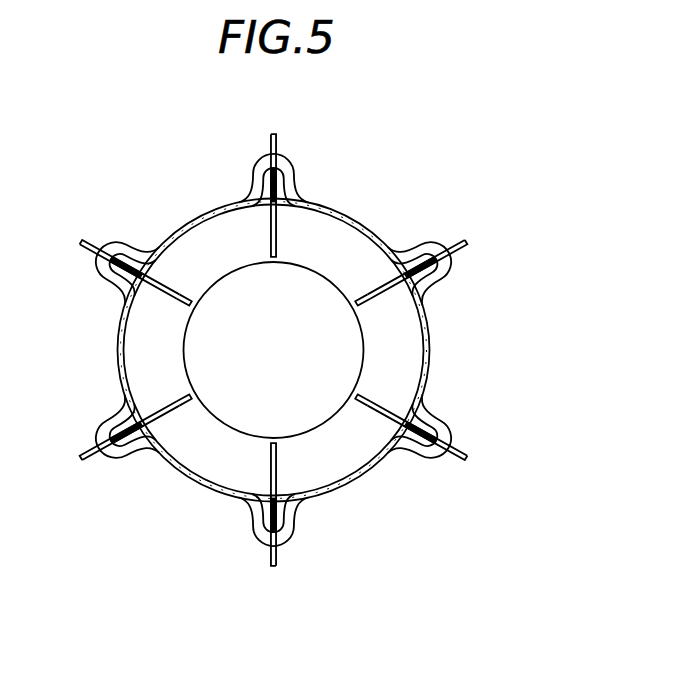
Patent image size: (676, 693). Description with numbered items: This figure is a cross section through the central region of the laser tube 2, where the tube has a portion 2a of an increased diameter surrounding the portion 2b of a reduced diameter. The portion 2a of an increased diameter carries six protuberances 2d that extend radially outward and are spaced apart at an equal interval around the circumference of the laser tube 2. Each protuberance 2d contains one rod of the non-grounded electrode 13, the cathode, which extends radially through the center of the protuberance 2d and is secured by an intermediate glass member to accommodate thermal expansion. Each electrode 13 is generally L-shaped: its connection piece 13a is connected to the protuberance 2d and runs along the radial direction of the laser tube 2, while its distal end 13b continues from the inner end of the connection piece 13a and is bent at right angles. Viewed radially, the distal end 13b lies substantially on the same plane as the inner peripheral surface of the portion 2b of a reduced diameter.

The laser tube 2 is at (362, 219).
The portion of an increased diameter 2a is at (381, 237).
The portion of a reduced diameter 2b is at (245, 266).
The protuberance 2d is at (296, 178).
The non-grounded electrode 13 is at (284, 129).
The connection piece 13a is at (278, 241).
The distal end 13b is at (276, 264).